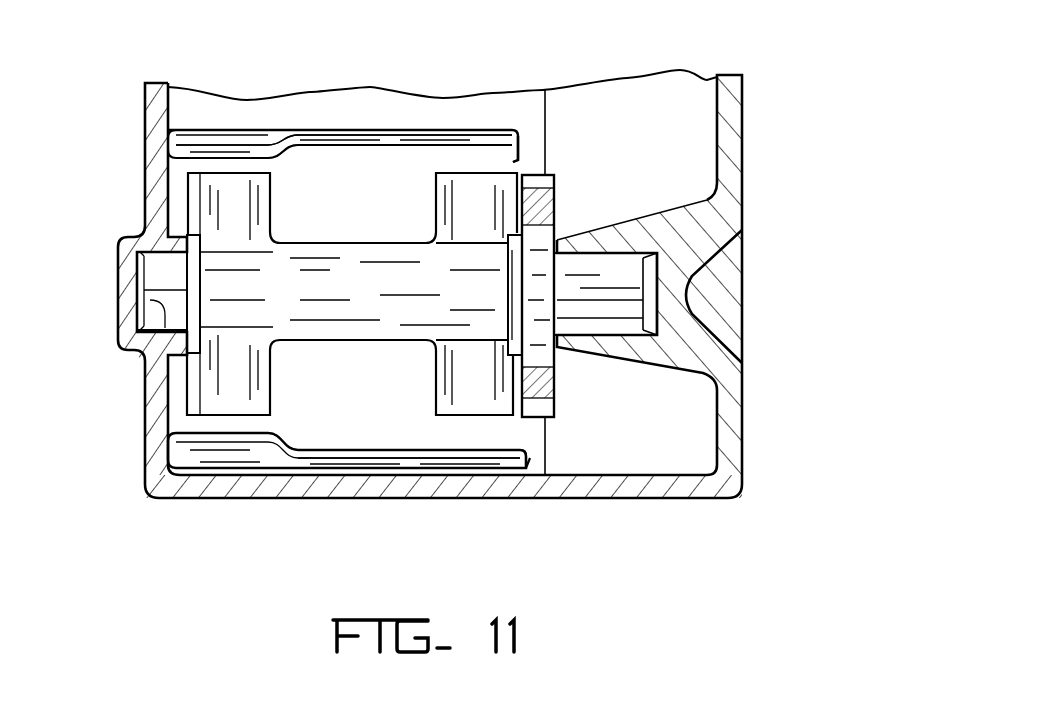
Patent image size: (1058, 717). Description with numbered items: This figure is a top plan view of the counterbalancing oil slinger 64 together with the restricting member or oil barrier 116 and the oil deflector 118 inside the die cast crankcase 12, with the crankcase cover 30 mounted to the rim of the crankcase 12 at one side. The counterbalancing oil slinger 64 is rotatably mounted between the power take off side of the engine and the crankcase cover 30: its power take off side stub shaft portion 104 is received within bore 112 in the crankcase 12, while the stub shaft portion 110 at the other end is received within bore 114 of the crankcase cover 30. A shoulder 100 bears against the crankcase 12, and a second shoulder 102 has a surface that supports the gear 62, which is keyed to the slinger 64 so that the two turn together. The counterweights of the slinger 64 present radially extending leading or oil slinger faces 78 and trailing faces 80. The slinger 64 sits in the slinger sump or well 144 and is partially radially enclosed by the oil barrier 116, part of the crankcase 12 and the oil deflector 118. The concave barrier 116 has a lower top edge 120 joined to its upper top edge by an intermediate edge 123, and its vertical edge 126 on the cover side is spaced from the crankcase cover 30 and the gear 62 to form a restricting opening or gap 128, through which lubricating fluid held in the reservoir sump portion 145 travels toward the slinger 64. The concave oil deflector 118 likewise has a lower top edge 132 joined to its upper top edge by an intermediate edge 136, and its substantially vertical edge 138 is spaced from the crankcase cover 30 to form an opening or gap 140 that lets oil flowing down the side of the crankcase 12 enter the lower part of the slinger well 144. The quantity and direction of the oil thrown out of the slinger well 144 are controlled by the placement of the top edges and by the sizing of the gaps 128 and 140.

The crankcase 12 is at (303, 497).
The crankcase cover 30 is at (747, 368).
The gear 62 is at (556, 205).
The counterbalancing oil slinger 64 is at (338, 370).
The leading or oil slinger faces 78 is at (242, 394).
The trailing faces 80 is at (238, 225).
The shoulder 100 is at (198, 286).
The shoulder 102 is at (512, 290).
The power take off side stub shaft portion 104 is at (157, 280).
The stub shaft portion 110 is at (600, 310).
The bore 112 is at (170, 310).
The bore 114 is at (612, 255).
The restricting member or oil barrier 116 is at (462, 128).
The oil deflector 118 is at (368, 470).
The lower top edge 120 is at (418, 130).
The intermediate edge 123 is at (282, 148).
The vertical edge 126 is at (518, 137).
The restricting opening or gap 128 is at (527, 160).
The lower top edge 132 is at (413, 458).
The intermediate edge 136 is at (277, 457).
The substantially vertical edge 138 is at (530, 455).
The opening or gap 140 is at (545, 478).
The slinger sump or well 144 is at (365, 287).
The reservoir sump portion 145 is at (380, 119).